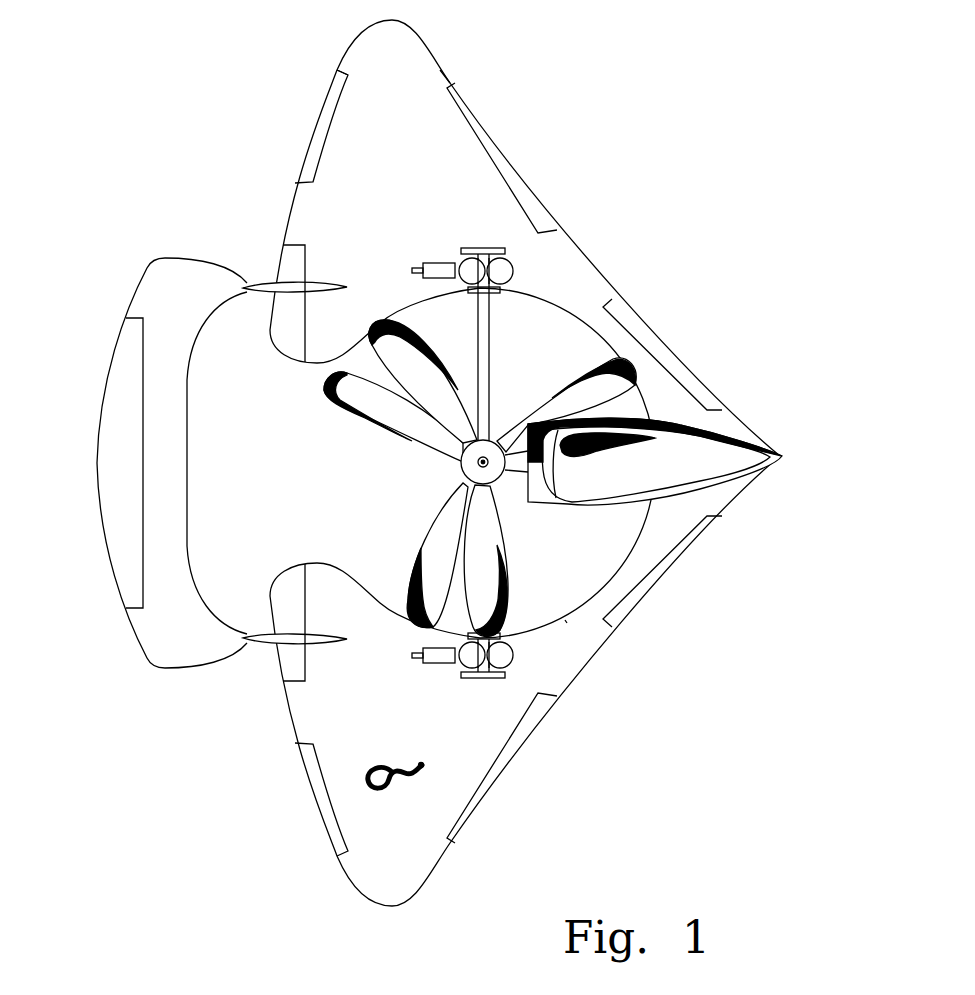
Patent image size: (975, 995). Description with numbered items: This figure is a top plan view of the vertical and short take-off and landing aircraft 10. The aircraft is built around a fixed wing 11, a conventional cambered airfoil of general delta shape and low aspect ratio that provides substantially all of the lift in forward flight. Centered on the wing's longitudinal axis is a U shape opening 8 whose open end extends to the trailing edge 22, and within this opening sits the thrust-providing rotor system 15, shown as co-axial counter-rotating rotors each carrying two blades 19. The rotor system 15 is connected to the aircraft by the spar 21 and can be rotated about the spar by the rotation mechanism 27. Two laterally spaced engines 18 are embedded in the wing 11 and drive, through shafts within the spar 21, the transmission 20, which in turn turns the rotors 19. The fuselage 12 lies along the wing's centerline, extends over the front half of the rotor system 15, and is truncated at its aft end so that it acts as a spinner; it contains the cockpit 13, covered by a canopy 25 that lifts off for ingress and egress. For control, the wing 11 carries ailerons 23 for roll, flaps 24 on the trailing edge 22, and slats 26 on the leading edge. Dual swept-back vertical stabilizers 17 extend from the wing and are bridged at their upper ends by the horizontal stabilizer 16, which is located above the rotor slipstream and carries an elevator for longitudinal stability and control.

The U shape opening 8 is at (640, 383).
The vertical and short take-off and landing aircraft 10 is at (600, 68).
The fixed wing 11 is at (442, 158).
The fuselage 12 is at (760, 443).
The cockpit 13 is at (670, 478).
The rotor system 15 is at (573, 355).
The horizontal stabilizer 16 is at (175, 325).
The vertical stabilizer 17 is at (310, 287).
The engine 18 is at (457, 257).
The rotor blade 19 is at (363, 402).
The transmission 20 is at (465, 480).
The spar 21 is at (585, 263).
The trailing edge 22 is at (285, 208).
The aileron 23 is at (327, 112).
The flap 24 is at (287, 267).
The canopy 25 is at (722, 483).
The slat 26 is at (533, 213).
The rotation mechanism 27 is at (498, 292).